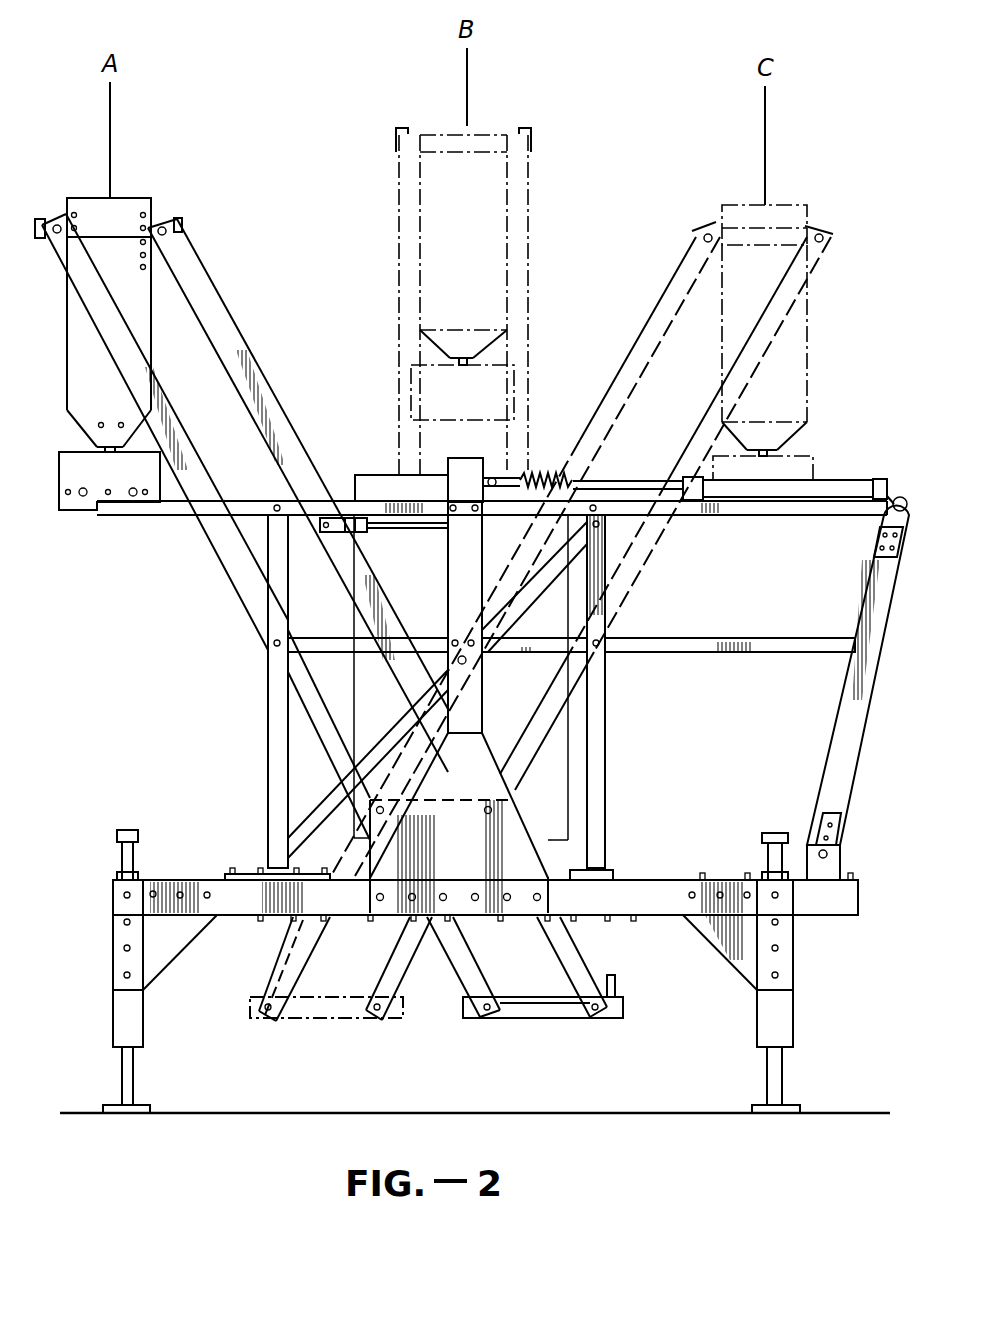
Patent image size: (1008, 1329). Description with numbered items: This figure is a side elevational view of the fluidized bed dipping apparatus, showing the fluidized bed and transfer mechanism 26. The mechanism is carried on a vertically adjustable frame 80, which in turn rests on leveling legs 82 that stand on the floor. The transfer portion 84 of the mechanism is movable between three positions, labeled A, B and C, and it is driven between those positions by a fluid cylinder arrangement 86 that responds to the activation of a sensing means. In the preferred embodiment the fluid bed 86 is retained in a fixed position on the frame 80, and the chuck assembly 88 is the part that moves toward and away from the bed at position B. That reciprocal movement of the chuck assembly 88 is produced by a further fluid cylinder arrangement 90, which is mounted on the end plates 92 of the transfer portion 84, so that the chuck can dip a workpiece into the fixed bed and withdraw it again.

The fluidized bed and transfer mechanism 26 is at (850, 242).
The vertically adjustable frame 80 is at (406, 870).
The leveling legs 82 is at (778, 1072).
The transfer portion 84 is at (268, 355).
The fluid cylinder arrangement 86 is at (836, 476).
The chuck assembly 88 is at (72, 520).
The fluid cylinder arrangement 90 is at (150, 461).
The end plates 92 is at (141, 331).